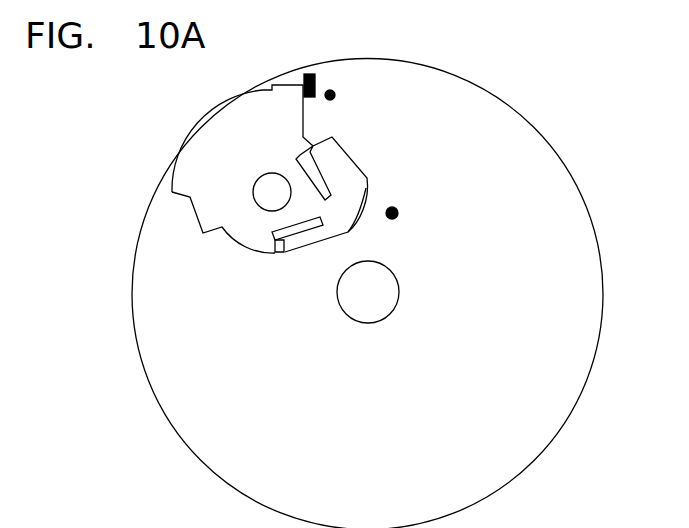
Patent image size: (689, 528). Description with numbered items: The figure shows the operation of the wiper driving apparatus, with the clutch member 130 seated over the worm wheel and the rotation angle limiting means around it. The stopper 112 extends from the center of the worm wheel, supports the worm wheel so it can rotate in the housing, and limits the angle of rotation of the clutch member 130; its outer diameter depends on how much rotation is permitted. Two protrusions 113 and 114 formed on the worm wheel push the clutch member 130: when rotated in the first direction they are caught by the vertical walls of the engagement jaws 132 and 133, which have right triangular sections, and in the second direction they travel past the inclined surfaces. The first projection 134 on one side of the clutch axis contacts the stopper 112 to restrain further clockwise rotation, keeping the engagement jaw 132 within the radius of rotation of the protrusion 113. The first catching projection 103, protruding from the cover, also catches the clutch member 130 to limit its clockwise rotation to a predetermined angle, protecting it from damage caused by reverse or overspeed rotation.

The first catching projection 103 is at (304, 82).
The stopper 112 is at (427, 292).
The protrusion 113 is at (398, 213).
The protrusion 114 is at (331, 90).
The clutch member 130 is at (295, 195).
The engagement jaw 132 is at (267, 250).
The engagement jaw 133 is at (322, 140).
The first projection 134 is at (366, 184).